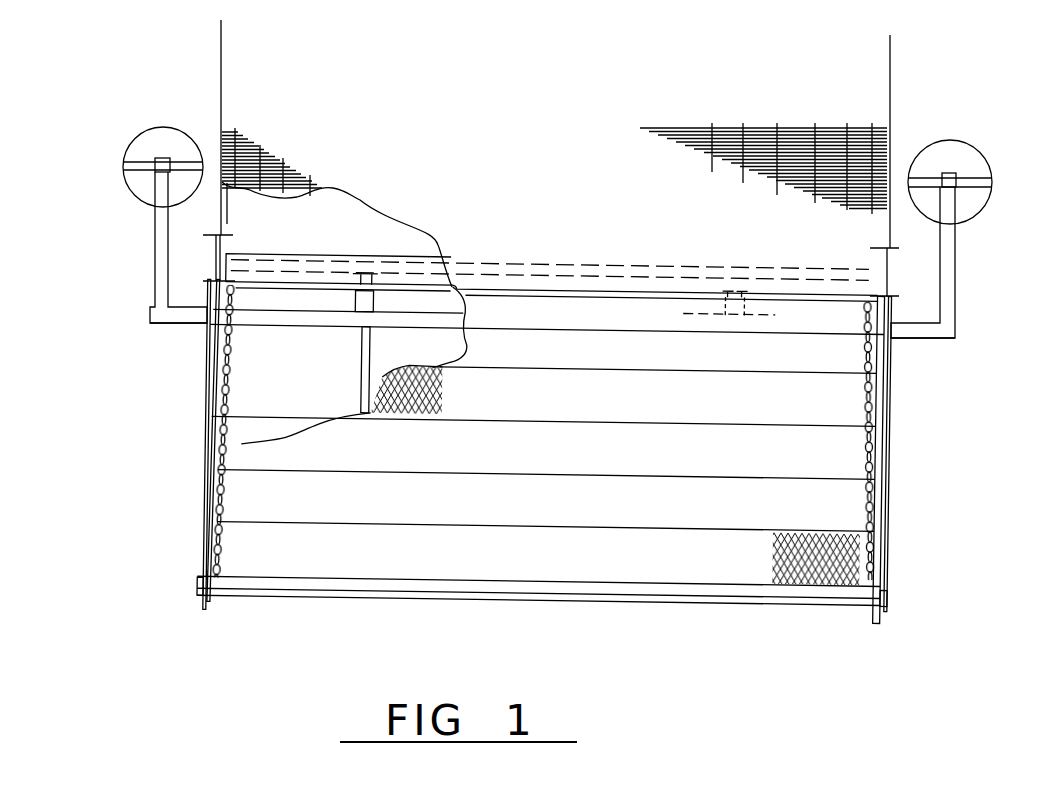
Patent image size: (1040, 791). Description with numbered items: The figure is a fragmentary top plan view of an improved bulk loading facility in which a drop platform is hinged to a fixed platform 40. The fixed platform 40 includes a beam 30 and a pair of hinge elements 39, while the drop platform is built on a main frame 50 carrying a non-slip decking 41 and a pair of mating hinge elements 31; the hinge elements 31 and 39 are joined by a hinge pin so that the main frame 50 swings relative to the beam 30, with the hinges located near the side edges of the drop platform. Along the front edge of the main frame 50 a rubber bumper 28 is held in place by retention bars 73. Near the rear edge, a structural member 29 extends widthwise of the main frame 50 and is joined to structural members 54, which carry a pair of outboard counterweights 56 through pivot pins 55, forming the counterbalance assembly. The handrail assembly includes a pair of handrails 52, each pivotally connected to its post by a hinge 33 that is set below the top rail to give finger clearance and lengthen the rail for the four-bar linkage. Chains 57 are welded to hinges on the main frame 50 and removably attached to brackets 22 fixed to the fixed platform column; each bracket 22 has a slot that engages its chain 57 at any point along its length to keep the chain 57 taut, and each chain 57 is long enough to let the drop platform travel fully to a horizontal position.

The bracket 22 is at (238, 286).
The rubber bumper 28 is at (718, 607).
The structural member 29 is at (177, 324).
The beam 30 is at (310, 256).
The hinge element 31 is at (378, 302).
The hinge 33 is at (197, 580).
The hinge element 39 is at (351, 280).
The fixed platform 40 is at (250, 193).
The decking 41 is at (601, 556).
The main frame 50 is at (361, 352).
The handrail 52 is at (200, 540).
The structural member 54 is at (153, 262).
The pivot pin 55 is at (153, 170).
The counterweight 56 is at (153, 126).
The chain 57 is at (224, 427).
The retention bar 73 is at (668, 600).